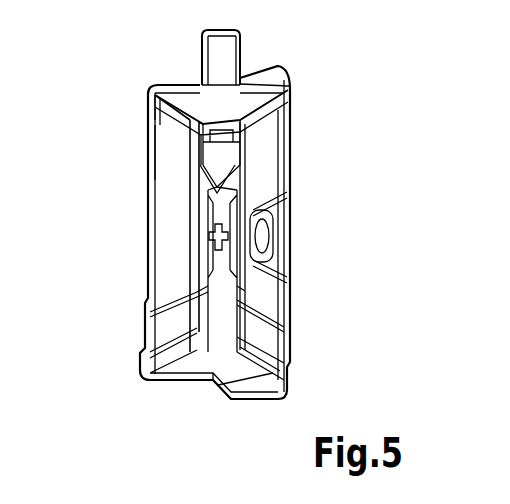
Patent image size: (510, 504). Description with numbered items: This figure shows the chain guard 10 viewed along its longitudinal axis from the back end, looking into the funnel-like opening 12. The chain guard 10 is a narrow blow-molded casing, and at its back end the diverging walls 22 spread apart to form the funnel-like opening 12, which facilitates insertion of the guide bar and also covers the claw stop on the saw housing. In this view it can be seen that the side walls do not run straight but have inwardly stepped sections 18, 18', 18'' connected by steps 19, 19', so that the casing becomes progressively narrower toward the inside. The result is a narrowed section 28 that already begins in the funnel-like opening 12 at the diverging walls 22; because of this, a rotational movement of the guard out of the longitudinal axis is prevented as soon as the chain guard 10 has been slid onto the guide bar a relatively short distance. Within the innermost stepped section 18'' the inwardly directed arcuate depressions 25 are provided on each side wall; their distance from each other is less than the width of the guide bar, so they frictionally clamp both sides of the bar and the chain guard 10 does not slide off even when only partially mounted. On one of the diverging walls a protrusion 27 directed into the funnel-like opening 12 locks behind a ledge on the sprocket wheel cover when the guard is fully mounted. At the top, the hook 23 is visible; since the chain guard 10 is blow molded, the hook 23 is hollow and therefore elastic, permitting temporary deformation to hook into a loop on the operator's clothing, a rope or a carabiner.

The chain guard 10 is at (300, 105).
The funnel-like opening 12 is at (230, 357).
The inwardly stepped section 18 is at (217, 369).
The inwardly stepped section 18' is at (217, 385).
The inwardly stepped section 18'' is at (160, 316).
The step 19 is at (121, 132).
The step 19' is at (119, 174).
The diverging wall 22 is at (148, 251).
The hook 23 is at (220, 55).
The inwardly directed arcuate depression 25 is at (198, 251).
The protrusion 27 is at (266, 256).
The narrowed section 28 is at (225, 292).